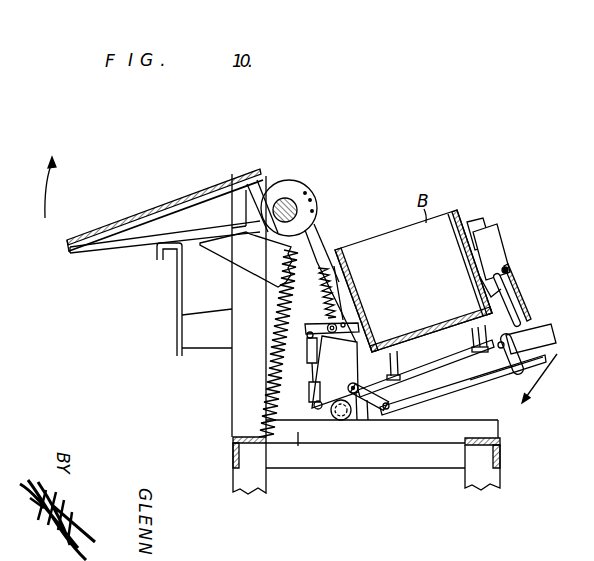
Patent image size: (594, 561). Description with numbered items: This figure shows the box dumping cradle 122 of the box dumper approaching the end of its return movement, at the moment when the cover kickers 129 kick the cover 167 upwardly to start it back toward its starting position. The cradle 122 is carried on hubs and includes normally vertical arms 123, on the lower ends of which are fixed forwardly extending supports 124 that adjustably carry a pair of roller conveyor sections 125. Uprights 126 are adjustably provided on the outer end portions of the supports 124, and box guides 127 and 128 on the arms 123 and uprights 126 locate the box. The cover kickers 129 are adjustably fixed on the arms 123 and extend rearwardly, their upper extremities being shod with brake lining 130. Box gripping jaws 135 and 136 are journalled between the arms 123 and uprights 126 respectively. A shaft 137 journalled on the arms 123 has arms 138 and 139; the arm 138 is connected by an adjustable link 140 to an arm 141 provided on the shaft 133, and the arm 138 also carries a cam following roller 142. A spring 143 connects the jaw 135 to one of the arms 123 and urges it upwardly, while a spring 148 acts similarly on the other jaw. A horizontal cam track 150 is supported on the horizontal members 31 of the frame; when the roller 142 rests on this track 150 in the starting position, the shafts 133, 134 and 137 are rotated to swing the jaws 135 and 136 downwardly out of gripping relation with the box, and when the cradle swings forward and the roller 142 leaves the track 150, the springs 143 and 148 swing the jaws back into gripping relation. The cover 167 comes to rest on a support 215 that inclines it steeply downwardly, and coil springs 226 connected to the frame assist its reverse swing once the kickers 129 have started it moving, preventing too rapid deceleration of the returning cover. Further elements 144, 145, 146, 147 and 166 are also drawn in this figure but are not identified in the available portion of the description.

The horizontal members 31 is at (249, 447).
The box inverting cradle 122 is at (340, 226).
The normally vertical arms 123 is at (317, 262).
The forwardly extending supports 124 is at (428, 388).
The roller conveyor sections 125 is at (470, 337).
The uprights 126 is at (499, 257).
The box guide 127 is at (345, 279).
The box guide 128 is at (466, 231).
The cover kickers 129 is at (255, 273).
The brake lining 130 is at (216, 250).
The shaft 133 is at (332, 333).
The shaft 134 is at (508, 271).
The box gripping jaw 135 is at (355, 326).
The box gripping jaw 136 is at (491, 286).
The shaft 137 is at (359, 389).
The arm 138 is at (345, 389).
The arm 139 is at (368, 414).
The adjustable link 140 is at (312, 398).
The arm 141 is at (321, 328).
The cam following roller 142 is at (336, 418).
The spring 143 is at (321, 289).
The pin 144 is at (501, 348).
The piston 145 is at (522, 335).
The cylinder 146 is at (531, 340).
The piston rod 147 is at (486, 376).
The spring 148 is at (521, 297).
The horizontal cam track 150 is at (312, 451).
The plank 166 is at (133, 249).
The cover 167 is at (162, 207).
The support 215 is at (177, 324).
The springs 226 is at (270, 369).